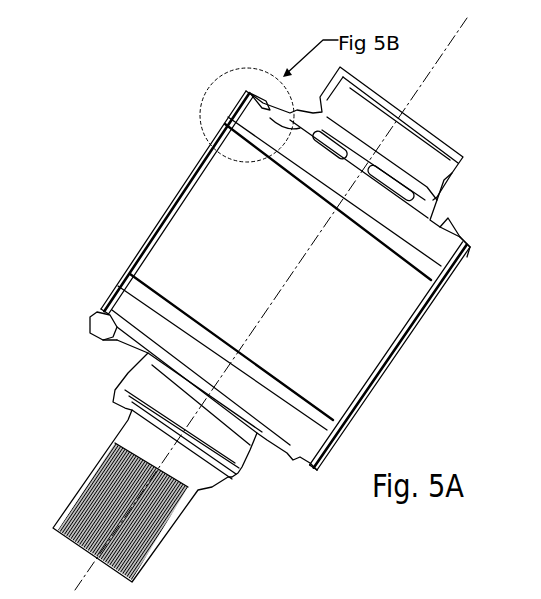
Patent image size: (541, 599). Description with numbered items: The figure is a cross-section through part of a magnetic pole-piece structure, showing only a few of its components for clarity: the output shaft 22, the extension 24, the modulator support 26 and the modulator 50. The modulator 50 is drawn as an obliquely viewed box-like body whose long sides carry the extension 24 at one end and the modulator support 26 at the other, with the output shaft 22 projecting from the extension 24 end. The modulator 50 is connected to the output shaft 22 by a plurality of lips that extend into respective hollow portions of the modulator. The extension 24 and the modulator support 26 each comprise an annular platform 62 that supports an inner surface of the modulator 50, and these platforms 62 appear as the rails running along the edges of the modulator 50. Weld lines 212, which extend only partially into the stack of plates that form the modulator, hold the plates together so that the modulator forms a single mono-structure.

The output shaft 22 is at (150, 556).
The extension 24 is at (104, 324).
The modulator support 26 is at (377, 132).
The modulator 50 is at (436, 355).
The annular platforms 62 is at (243, 124).
The weld lines 212 is at (409, 353).